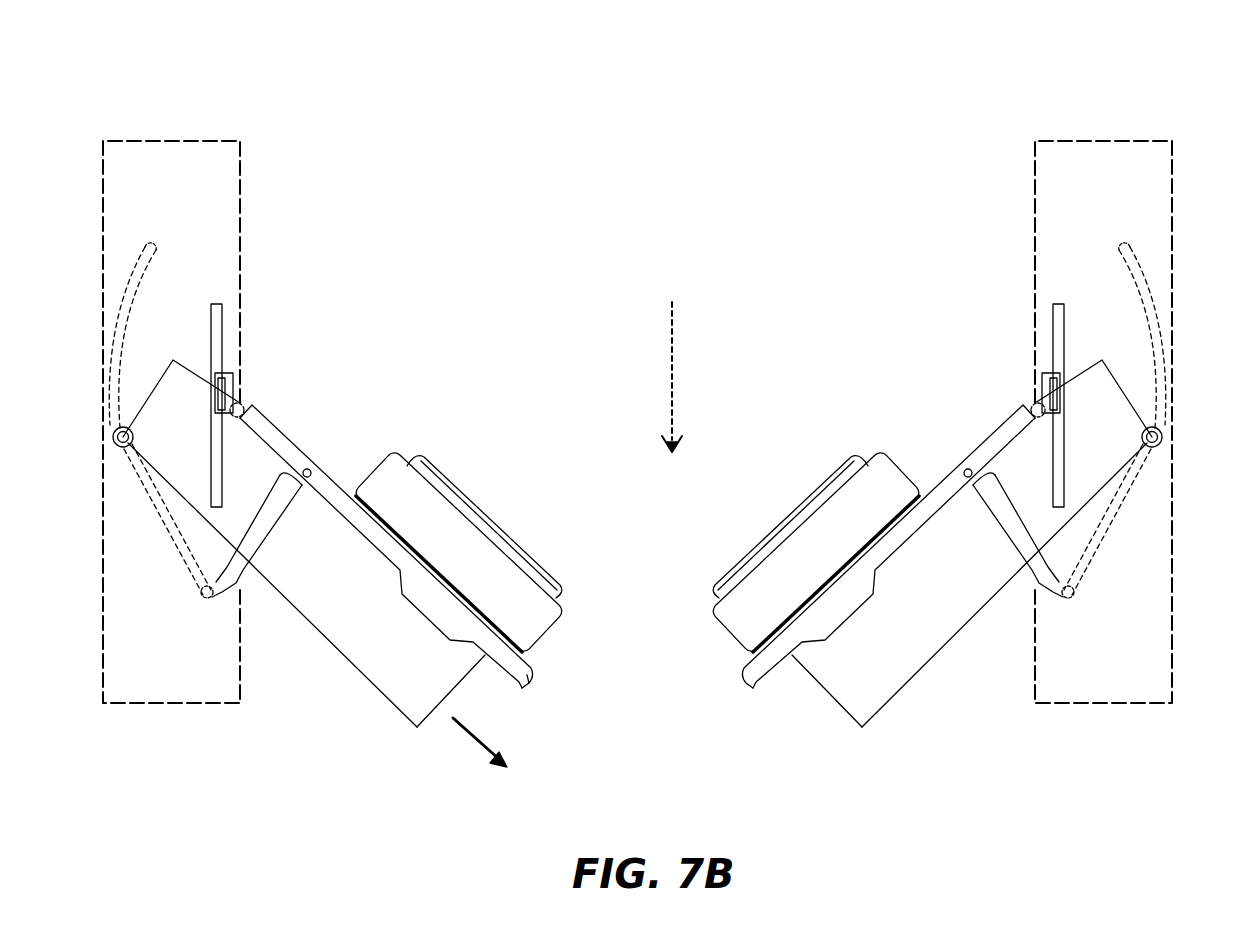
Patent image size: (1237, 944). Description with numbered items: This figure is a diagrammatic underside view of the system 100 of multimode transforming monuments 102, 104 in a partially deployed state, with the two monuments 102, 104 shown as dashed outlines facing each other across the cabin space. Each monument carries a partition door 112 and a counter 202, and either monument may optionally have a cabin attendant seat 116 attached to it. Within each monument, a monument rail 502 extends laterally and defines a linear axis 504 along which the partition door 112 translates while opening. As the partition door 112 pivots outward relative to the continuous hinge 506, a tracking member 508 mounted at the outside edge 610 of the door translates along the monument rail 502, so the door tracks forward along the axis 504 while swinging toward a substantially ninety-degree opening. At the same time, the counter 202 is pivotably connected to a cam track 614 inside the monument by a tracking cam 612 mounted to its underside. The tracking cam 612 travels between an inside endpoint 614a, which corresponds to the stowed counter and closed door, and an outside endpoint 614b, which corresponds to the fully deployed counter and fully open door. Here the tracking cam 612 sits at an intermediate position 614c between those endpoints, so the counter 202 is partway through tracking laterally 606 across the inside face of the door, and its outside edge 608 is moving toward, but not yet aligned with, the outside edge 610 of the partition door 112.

The system of multimode transforming monuments 100 is at (156, 92).
The monument 102 is at (202, 193).
The monument 104 is at (1065, 173).
The partition door 112 is at (278, 443).
The cabin attendant seat 116 is at (423, 505).
The counter 202 is at (373, 640).
The monument rail 502 is at (1062, 328).
The linear axis 504 is at (674, 380).
The continuous hinge 506 is at (241, 404).
The tracking member 508 is at (1055, 397).
The lateral tracking direction 606 is at (505, 765).
The outside edge of counter 608 is at (427, 719).
The outside edge of partition door 610 is at (527, 682).
The tracking cam 612 is at (1166, 437).
The cam track 614 is at (1110, 520).
The inside endpoint 614a is at (155, 252).
The outside endpoint 614b is at (205, 598).
The intermediate position 614c is at (113, 428).